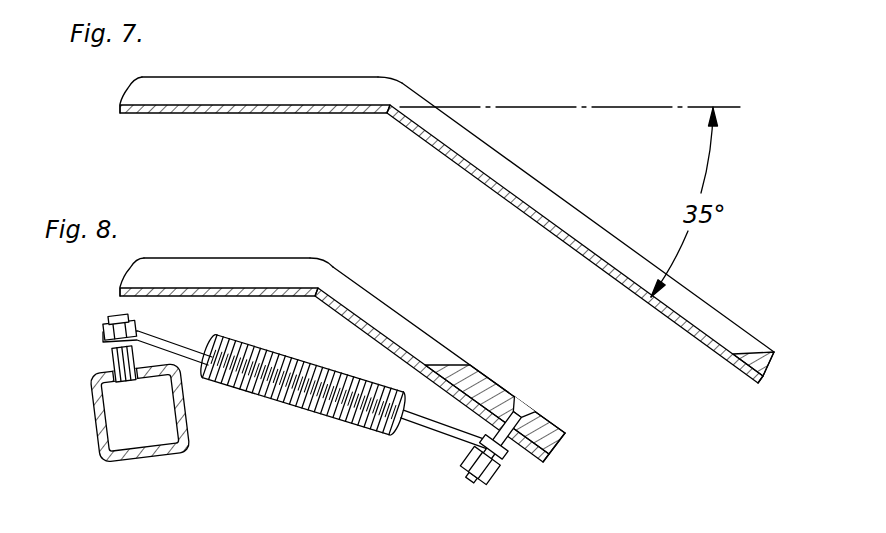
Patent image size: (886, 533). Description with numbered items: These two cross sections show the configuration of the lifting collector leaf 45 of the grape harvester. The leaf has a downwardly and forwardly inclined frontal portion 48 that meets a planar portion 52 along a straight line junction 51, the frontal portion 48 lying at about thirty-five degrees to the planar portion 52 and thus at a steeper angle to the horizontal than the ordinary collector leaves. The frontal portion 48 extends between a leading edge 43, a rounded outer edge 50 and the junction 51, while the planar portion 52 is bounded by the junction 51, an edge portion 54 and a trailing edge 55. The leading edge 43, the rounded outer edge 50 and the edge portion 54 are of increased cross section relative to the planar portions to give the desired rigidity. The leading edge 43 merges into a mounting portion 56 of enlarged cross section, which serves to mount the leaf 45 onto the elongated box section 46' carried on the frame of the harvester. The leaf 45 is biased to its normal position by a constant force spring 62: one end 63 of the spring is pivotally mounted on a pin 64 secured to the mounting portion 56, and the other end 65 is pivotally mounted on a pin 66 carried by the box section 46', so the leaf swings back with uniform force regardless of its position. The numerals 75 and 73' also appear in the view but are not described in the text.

In FIG. 7, the leading edge 43 is at (765, 384).
In FIG. 7, the lifting collector leaf 45 is at (740, 328).
In FIG. 8, the lifting collector leaf 45 is at (450, 340).
In FIG. 8, the box section 46' is at (101, 412).
In FIG. 7, the frontal portion 48 is at (560, 213).
In FIG. 8, the frontal portion 48 is at (403, 327).
In FIG. 7, the rounded outer edge 50 is at (697, 303).
In FIG. 8, the rounded outer edge 50 is at (410, 323).
In FIG. 7, the straight line junction 51 is at (397, 100).
In FIG. 8, the straight line junction 51 is at (333, 270).
In FIG. 7, the planar portion 52 is at (290, 106).
In FIG. 8, the planar portion 52 is at (262, 292).
In FIG. 7, the edge portion 54 is at (338, 83).
In FIG. 8, the edge portion 54 is at (222, 264).
In FIG. 7, the trailing edge 55 is at (120, 108).
In FIG. 8, the trailing edge 55 is at (120, 292).
In FIG. 8, the mounting portion 56 is at (556, 425).
In FIG. 8, the spring 62 is at (310, 411).
In FIG. 8, the spring end 63 is at (505, 462).
In FIG. 8, the pin 64 is at (481, 486).
In FIG. 8, the spring end 65 is at (104, 345).
In FIG. 8, the pin 66 is at (110, 311).
In FIG. 8, the frame member 75 is at (95, 528).
In FIG. 8, the frame member 73' is at (206, 525).